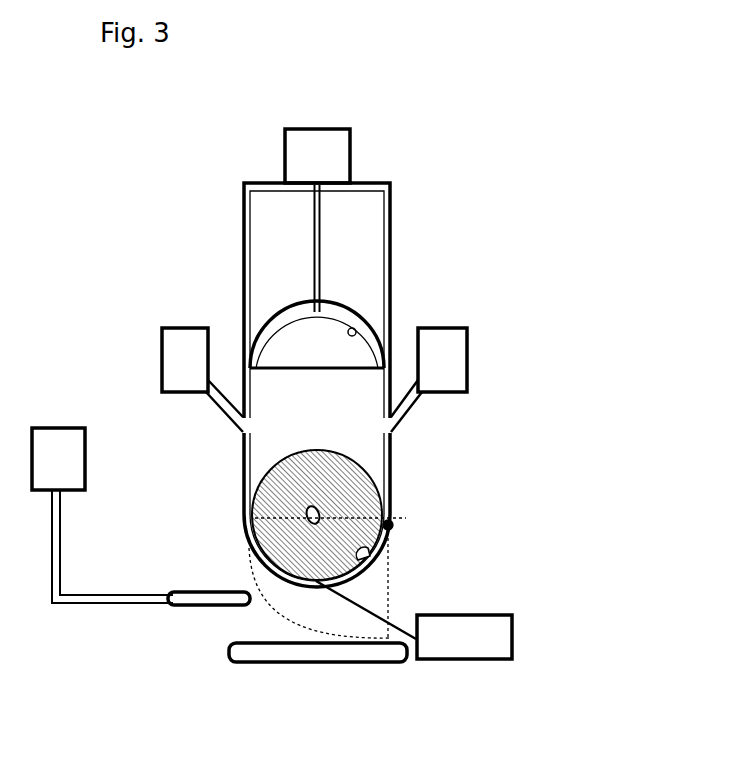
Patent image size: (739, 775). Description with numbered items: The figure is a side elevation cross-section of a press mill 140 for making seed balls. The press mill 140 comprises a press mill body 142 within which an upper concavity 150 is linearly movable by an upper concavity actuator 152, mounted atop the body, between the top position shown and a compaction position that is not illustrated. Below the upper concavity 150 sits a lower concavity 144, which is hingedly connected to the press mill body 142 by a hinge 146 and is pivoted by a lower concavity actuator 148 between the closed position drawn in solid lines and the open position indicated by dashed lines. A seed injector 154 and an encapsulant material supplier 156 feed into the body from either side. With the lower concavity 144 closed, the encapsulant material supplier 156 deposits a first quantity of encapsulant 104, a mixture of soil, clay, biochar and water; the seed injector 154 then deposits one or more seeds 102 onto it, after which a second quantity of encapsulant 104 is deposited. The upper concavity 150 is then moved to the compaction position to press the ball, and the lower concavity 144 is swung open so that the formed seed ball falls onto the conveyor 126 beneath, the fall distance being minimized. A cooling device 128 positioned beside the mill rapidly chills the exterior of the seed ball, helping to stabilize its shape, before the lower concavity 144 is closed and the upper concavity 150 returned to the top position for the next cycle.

The press mill 140 is at (473, 129).
The press mill body 142 is at (392, 240).
The upper concavity 150 is at (356, 332).
The upper concavity actuator 152 is at (285, 155).
The seed injector 154 is at (162, 360).
The encapsulant material supplier 156 is at (467, 368).
The encapsulant 104 is at (268, 497).
The seed 102 is at (305, 518).
The hinge 146 is at (392, 524).
The lower concavity 144 is at (372, 554).
The lower concavity actuator 148 is at (513, 636).
The conveyor 126 is at (368, 664).
The cooling device 128 is at (172, 600).